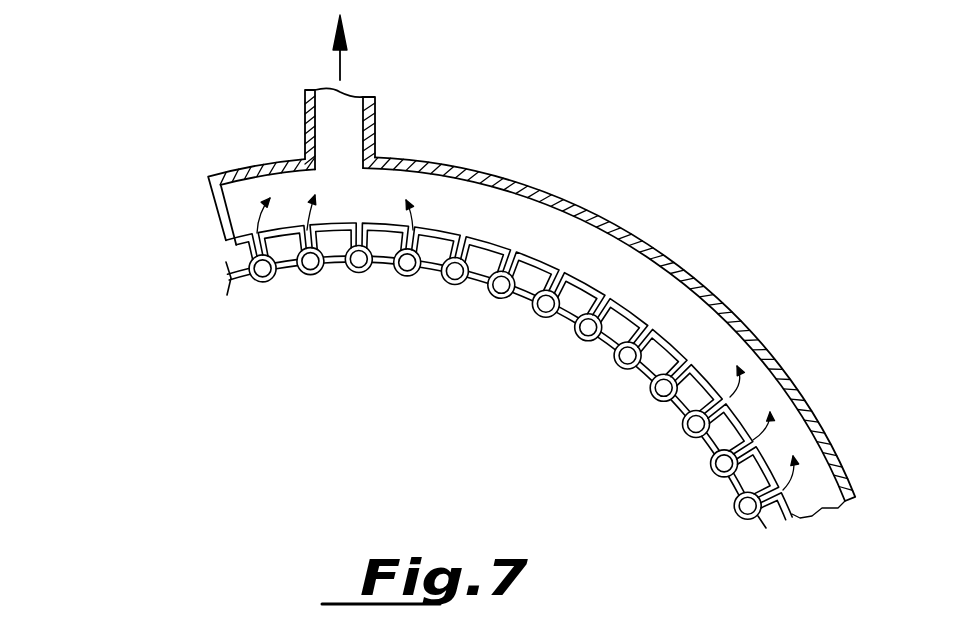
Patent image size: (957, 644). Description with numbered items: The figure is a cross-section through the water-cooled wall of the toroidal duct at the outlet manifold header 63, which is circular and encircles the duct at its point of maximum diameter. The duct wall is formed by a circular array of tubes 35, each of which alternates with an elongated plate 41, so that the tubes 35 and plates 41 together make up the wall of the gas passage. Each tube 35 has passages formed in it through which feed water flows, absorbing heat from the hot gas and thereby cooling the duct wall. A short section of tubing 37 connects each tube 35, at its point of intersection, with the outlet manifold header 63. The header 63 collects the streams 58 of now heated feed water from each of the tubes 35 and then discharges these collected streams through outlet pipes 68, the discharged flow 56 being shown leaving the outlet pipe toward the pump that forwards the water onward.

The outlet manifold header 63 is at (707, 288).
The outlet pipes 68 is at (373, 137).
The exhaust air flow 56 is at (340, 62).
The streams of heated feed water 58 is at (412, 205).
The elongated plate 41 is at (525, 295).
The tubes 35 is at (625, 365).
The short section of tubing 37 is at (773, 503).